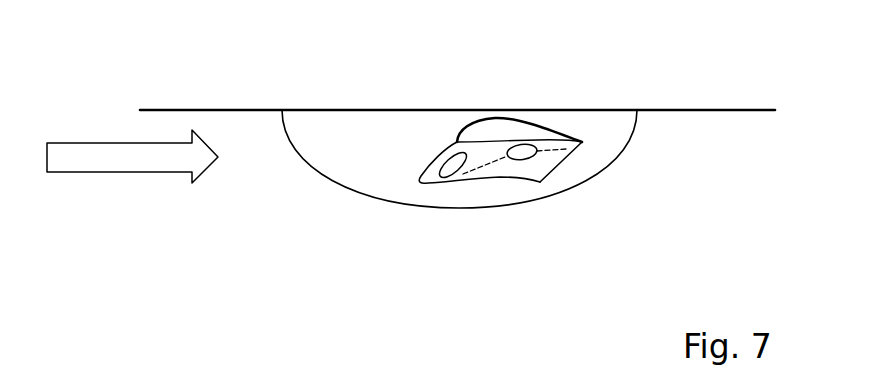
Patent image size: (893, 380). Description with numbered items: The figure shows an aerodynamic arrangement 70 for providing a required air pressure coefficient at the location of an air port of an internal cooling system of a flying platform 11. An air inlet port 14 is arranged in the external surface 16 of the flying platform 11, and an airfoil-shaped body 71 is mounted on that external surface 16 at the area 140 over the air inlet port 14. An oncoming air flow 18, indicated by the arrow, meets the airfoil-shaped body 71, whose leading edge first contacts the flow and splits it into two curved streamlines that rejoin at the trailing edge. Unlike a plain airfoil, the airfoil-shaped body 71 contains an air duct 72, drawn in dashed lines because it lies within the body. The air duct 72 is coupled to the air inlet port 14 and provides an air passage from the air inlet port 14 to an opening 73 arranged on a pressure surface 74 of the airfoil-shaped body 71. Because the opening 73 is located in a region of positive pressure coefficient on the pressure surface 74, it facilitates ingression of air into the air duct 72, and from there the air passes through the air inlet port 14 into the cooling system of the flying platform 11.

The flying platform 11 is at (323, 178).
The air inlet port 14 is at (567, 156).
The area 140 is at (562, 177).
The external surface 16 is at (618, 130).
The air flow 18 is at (119, 173).
The aerodynamic arrangement 70 is at (273, 292).
The airfoil-shaped body 71 is at (495, 128).
The air duct 72 is at (467, 173).
The opening 73 is at (452, 163).
The pressure surface 74 is at (488, 167).